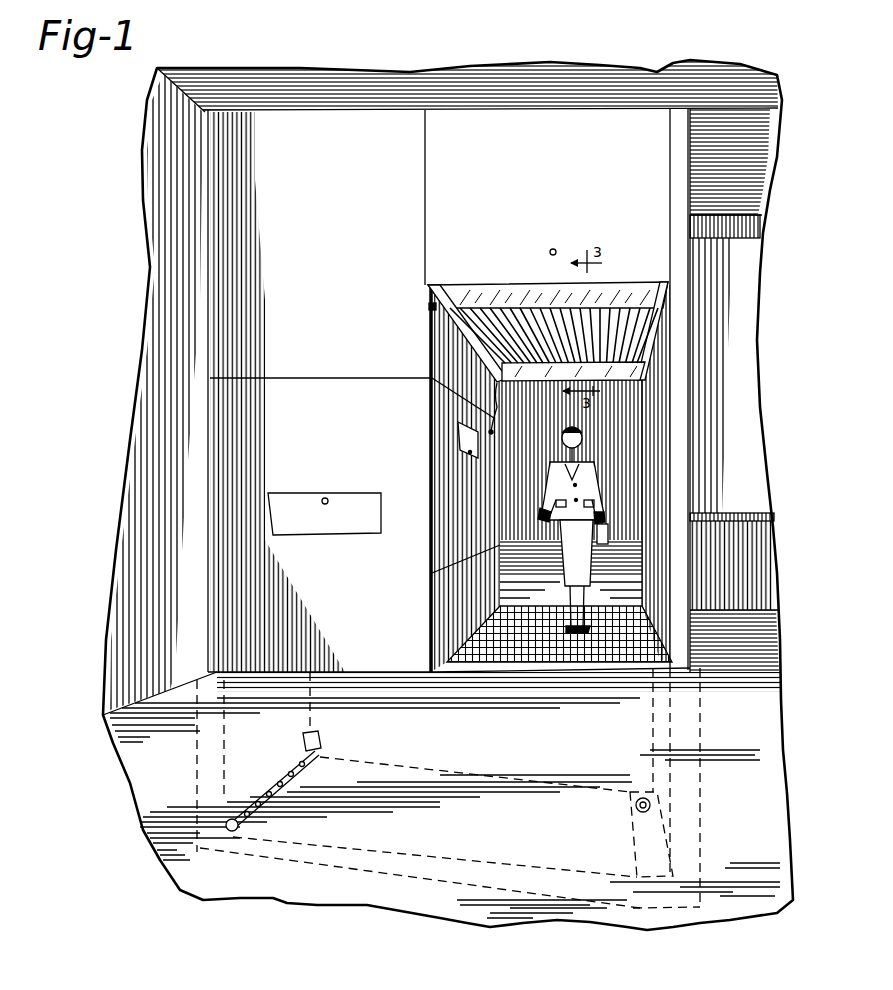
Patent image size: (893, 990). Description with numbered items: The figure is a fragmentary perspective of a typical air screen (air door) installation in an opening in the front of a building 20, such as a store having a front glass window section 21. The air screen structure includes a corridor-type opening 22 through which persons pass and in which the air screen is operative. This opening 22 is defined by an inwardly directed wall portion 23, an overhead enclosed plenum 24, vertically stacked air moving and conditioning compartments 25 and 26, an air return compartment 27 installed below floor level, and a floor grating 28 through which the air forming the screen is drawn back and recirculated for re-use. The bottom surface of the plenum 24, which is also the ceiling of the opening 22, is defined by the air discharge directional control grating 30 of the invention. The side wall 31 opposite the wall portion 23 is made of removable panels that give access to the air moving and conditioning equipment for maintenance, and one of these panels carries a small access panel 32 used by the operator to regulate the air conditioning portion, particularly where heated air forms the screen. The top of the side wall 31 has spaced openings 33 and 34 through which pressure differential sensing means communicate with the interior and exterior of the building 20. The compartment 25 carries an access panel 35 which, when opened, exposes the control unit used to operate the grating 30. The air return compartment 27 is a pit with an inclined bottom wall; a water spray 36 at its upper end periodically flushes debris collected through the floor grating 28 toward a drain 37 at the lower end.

The building 20 is at (766, 119).
The front glass window section 21 is at (756, 407).
The corridor-type opening 22 is at (644, 503).
The inwardly directed wall portion 23 is at (690, 457).
The overhead enclosed plenum 24 is at (528, 160).
The air moving and conditioning compartment 25 is at (344, 441).
The air moving and conditioning compartment 26 is at (330, 212).
The air return compartment 27 is at (637, 716).
The floor grating 28 is at (640, 606).
The air discharge directional control grating 30 is at (486, 283).
The side wall 31 is at (494, 545).
The access panel 32 is at (462, 433).
The opening 33 is at (430, 307).
The opening 34 is at (490, 416).
The access panel 35 is at (326, 534).
The water spray 36 is at (283, 777).
The drain 37 is at (634, 806).